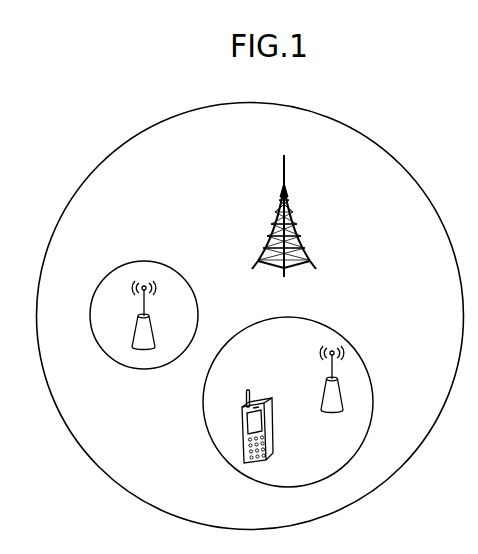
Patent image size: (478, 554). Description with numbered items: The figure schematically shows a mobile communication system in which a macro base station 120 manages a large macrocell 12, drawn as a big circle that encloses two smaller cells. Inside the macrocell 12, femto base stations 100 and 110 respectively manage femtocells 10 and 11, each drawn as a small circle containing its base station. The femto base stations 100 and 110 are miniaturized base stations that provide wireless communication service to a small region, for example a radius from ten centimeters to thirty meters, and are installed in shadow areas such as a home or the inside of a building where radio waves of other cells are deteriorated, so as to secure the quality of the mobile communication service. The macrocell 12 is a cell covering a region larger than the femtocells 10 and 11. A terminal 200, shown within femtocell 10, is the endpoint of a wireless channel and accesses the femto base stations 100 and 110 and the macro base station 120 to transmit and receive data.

The macrocell 12 is at (378, 141).
The macro base station 120 is at (295, 219).
The femtocell 11 is at (195, 302).
The femto base station 110 is at (146, 333).
The femtocell 10 is at (353, 346).
The femto base station 100 is at (334, 396).
The terminal 200 is at (243, 432).